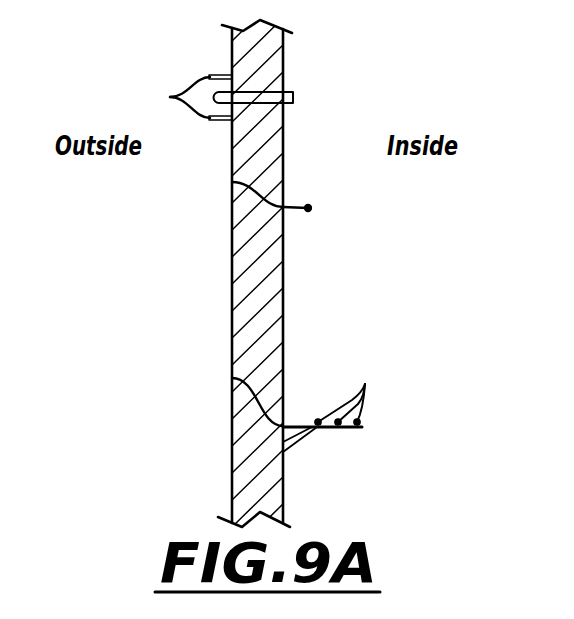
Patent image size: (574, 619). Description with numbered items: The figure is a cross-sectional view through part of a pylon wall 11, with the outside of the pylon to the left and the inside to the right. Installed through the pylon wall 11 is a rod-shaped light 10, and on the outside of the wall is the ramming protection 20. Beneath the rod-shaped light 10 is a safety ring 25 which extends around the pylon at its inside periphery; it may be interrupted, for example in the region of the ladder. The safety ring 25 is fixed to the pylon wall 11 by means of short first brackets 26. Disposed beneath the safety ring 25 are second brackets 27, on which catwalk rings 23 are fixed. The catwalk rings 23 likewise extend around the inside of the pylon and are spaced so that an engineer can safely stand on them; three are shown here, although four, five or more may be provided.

The rod-shaped light 10 is at (295, 98).
The pylon wall 11 is at (270, 66).
The ramming protection 20 is at (170, 97).
The catwalk rings 23 is at (365, 384).
The safety ring 25 is at (308, 208).
The first brackets 26 is at (232, 181).
The second brackets 27 is at (232, 378).